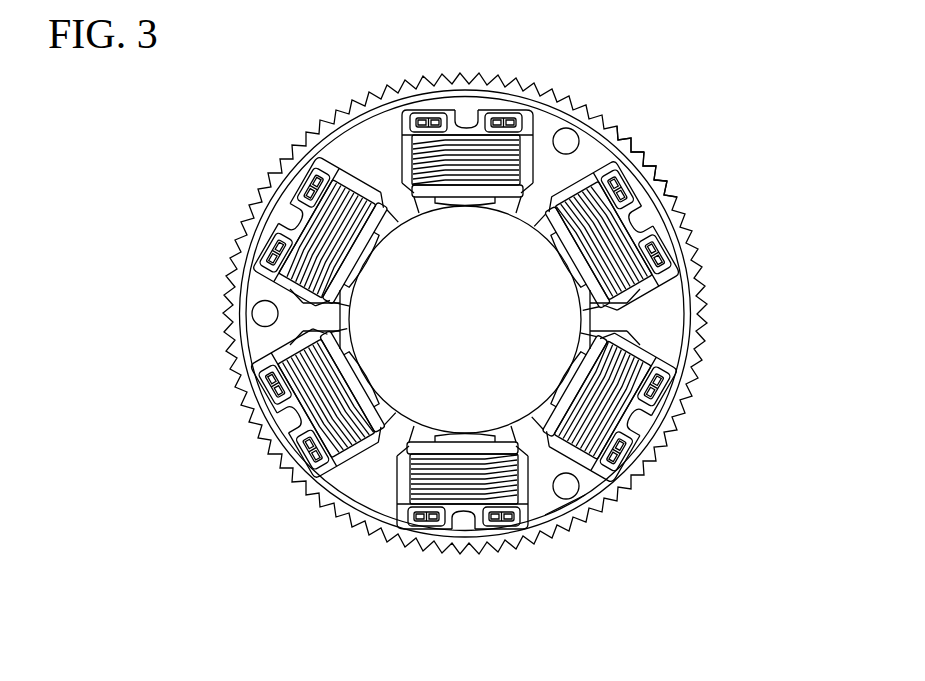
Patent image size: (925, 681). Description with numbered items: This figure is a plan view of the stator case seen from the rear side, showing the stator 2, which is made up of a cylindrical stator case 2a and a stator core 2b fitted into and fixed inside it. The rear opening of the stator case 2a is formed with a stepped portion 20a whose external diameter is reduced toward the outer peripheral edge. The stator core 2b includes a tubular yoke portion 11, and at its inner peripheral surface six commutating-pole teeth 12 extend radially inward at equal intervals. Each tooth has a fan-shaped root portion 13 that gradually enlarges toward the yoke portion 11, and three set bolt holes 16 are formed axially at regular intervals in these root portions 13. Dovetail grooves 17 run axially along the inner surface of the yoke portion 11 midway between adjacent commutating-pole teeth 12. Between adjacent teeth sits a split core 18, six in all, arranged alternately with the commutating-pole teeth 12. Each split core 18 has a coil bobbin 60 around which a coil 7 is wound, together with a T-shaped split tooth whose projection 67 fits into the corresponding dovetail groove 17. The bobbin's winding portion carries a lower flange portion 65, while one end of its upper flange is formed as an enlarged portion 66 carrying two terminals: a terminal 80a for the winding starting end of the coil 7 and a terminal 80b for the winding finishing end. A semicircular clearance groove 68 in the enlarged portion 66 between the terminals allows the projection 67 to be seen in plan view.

The stator 2 is at (750, 76).
The stator case 2a is at (665, 165).
The stator core 2b is at (634, 149).
The coil 7 is at (570, 513).
The yoke portion 11 is at (657, 222).
The commutating-pole tooth 12 is at (650, 292).
The root portion 13 is at (543, 123).
The set bolt hole 16 is at (577, 131).
The dovetail groove 17 is at (594, 459).
The split core 18 is at (613, 318).
The stepped portion 20a is at (336, 134).
The coil bobbin 60 is at (652, 372).
The lower flange portion 65 is at (413, 445).
The enlarged portion 66 is at (413, 507).
The projection 67 is at (641, 418).
The clearance groove 68 is at (468, 508).
The terminal of winding starting end 80a is at (620, 182).
The terminal of winding finishing end 80b is at (655, 250).